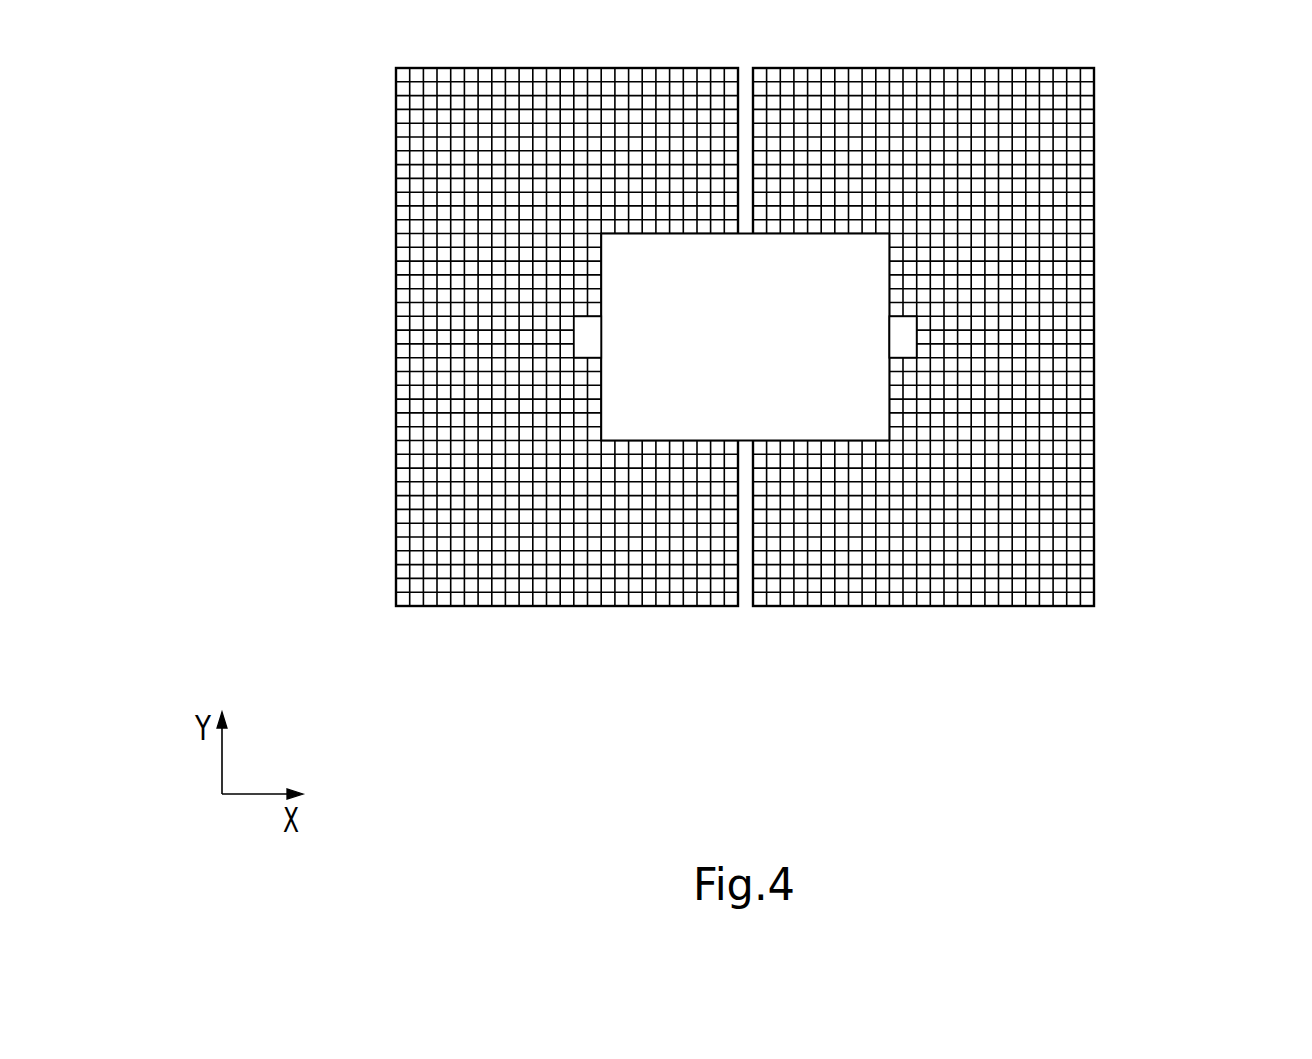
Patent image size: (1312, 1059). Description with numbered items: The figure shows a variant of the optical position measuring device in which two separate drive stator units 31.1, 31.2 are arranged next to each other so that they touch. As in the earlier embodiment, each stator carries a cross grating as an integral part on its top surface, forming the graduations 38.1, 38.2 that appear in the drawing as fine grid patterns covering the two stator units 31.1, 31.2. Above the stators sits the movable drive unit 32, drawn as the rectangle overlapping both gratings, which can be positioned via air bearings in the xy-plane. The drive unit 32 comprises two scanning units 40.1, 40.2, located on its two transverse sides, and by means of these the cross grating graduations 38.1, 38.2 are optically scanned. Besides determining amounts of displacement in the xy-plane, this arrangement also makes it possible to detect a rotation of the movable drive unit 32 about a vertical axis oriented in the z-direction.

The drive stator unit 31.1 is at (385, 489).
The drive stator unit 31.2 is at (1108, 490).
The movable drive unit 32 is at (827, 402).
The graduation 38.1 is at (430, 212).
The graduation 38.2 is at (1063, 190).
The scanning unit 40.1 is at (585, 337).
The scanning unit 40.2 is at (905, 338).